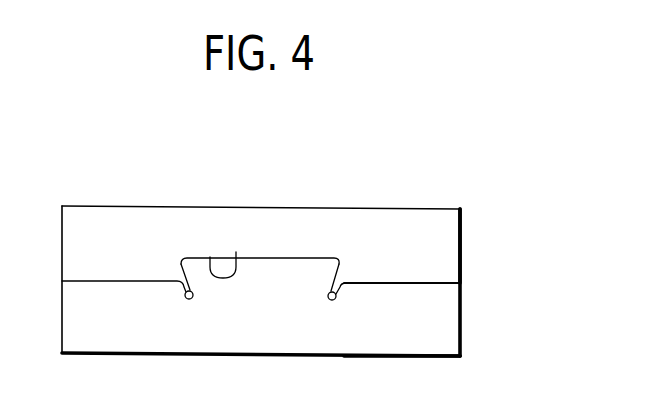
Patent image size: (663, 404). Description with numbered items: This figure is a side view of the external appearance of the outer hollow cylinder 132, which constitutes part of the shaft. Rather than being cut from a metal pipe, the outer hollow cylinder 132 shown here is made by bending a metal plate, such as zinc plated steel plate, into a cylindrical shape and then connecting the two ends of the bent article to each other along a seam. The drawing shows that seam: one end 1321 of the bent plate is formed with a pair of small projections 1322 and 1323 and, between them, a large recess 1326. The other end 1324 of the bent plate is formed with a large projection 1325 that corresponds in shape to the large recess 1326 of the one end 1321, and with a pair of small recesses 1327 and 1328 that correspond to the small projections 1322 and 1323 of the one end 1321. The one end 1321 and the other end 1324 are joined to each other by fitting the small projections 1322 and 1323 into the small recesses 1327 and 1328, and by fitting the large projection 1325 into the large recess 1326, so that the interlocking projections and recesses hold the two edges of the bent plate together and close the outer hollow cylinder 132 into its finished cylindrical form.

The outer hollow cylinder 132 is at (407, 225).
The one end 1321 is at (443, 262).
The small projection 1322 is at (178, 291).
The small projection 1323 is at (336, 300).
The other end 1324 is at (445, 310).
The large projection 1325 is at (276, 270).
The large recess 1326 is at (217, 254).
The small recess 1327 is at (193, 294).
The small recess 1328 is at (328, 298).